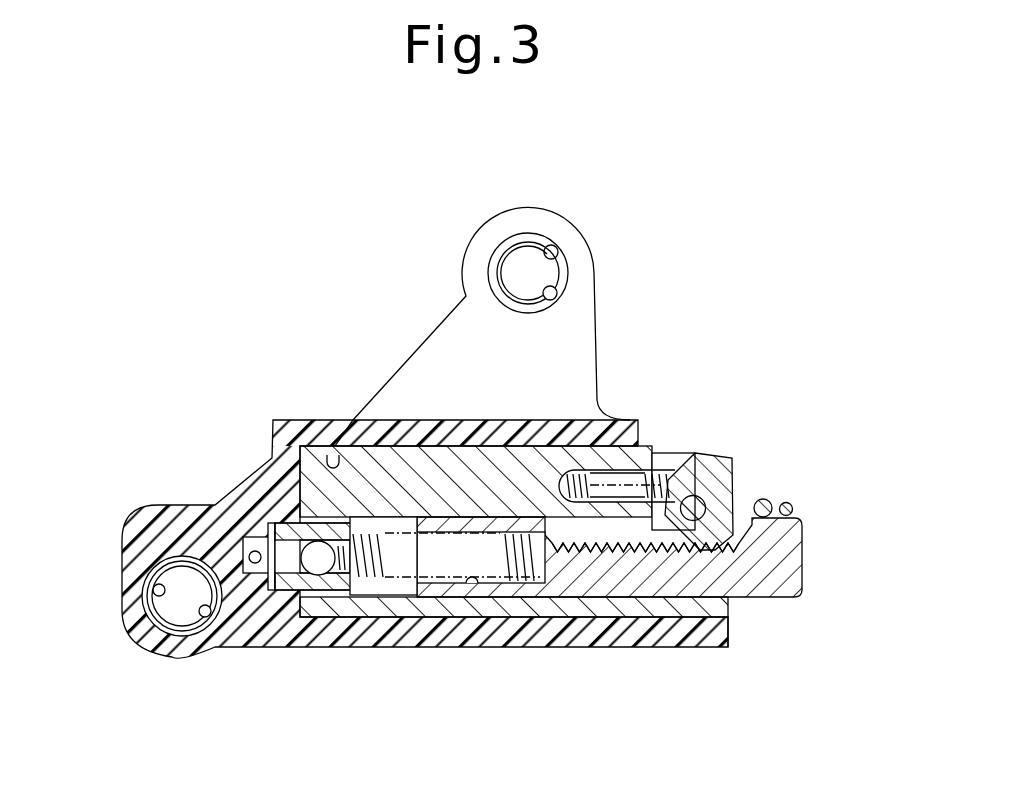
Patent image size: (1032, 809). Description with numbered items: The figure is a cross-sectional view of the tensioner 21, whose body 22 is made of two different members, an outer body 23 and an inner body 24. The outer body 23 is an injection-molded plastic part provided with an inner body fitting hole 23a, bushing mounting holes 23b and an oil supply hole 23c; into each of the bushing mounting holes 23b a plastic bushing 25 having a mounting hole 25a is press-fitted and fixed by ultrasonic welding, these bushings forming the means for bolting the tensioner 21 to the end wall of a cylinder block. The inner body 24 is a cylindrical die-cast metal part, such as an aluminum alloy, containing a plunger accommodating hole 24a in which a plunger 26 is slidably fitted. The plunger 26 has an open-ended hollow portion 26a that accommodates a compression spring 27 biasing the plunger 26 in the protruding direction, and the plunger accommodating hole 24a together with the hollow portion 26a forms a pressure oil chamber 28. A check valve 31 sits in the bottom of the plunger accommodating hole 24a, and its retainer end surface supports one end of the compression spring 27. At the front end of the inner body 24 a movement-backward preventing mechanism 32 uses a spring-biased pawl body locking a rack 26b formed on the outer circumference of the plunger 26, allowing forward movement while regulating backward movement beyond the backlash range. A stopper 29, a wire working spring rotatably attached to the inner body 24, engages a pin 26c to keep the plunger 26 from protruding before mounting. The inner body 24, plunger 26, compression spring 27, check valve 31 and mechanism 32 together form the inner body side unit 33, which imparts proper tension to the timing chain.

The tensioner 21 is at (576, 197).
The body 22 is at (392, 284).
The outer body 23 is at (420, 350).
The inner body fitting hole 23a is at (327, 455).
The bushing mounting holes 23b is at (556, 250).
The oil supply hole 23c is at (250, 550).
The inner body 24 is at (365, 420).
The plunger accommodating hole 24a is at (376, 595).
The bushing 25 is at (565, 273).
The mounting hole 25a is at (553, 292).
The plunger 26 is at (803, 563).
The hollow portion 26a is at (474, 583).
The rack 26b is at (615, 552).
The pin 26c is at (765, 499).
The compression spring 27 is at (530, 585).
The pressure oil chamber 28 is at (466, 573).
The stopper 29 is at (792, 509).
The check valve 31 is at (320, 602).
The movement-backward preventing mechanism 32 is at (716, 450).
The inner body side unit 33 is at (748, 620).